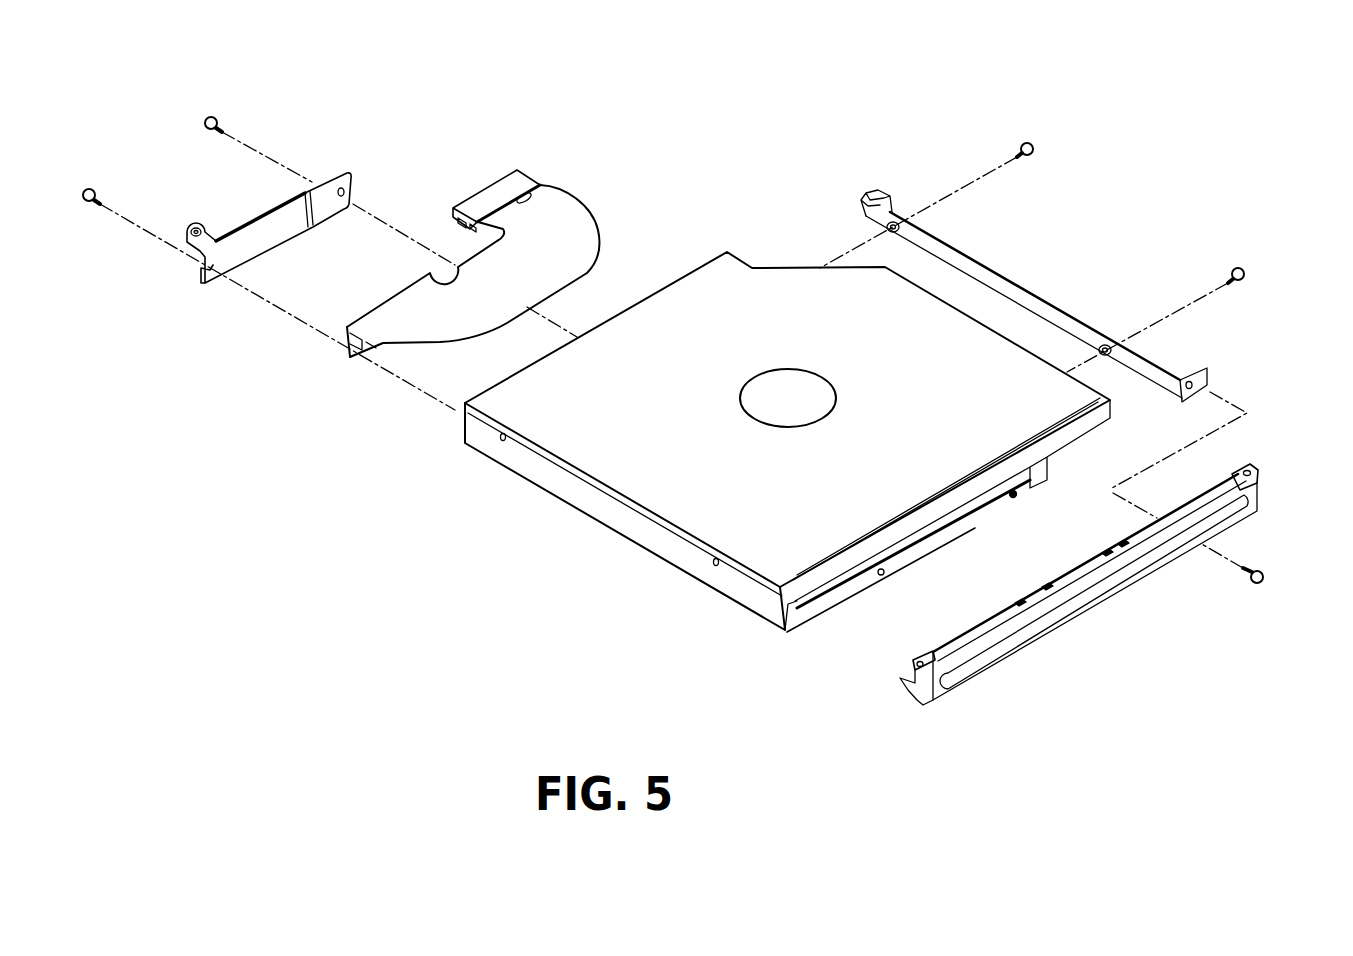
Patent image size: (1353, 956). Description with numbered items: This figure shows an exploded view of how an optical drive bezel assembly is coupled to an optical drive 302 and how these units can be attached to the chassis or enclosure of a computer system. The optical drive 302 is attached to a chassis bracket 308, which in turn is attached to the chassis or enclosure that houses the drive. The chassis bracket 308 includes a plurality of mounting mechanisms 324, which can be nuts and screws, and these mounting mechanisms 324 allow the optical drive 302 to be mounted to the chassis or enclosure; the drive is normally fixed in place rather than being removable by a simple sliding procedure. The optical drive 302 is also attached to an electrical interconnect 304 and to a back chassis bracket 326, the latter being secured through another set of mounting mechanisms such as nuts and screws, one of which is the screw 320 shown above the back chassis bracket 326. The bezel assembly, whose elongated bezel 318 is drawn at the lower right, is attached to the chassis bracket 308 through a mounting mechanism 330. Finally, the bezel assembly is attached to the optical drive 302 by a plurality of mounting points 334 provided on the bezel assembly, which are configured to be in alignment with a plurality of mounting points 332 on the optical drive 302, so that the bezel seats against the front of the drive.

The optical drive 302 is at (838, 466).
The electrical interconnect 304 is at (541, 279).
The chassis bracket 308 is at (1007, 273).
The bezel 318 is at (1262, 483).
The screw 320 is at (220, 117).
The mounting mechanisms 324 is at (1020, 143).
The back chassis bracket 326 is at (277, 236).
The mounting mechanism 330 is at (1273, 577).
The mounting points 332 is at (1013, 496).
The mounting points 334 is at (1018, 599).